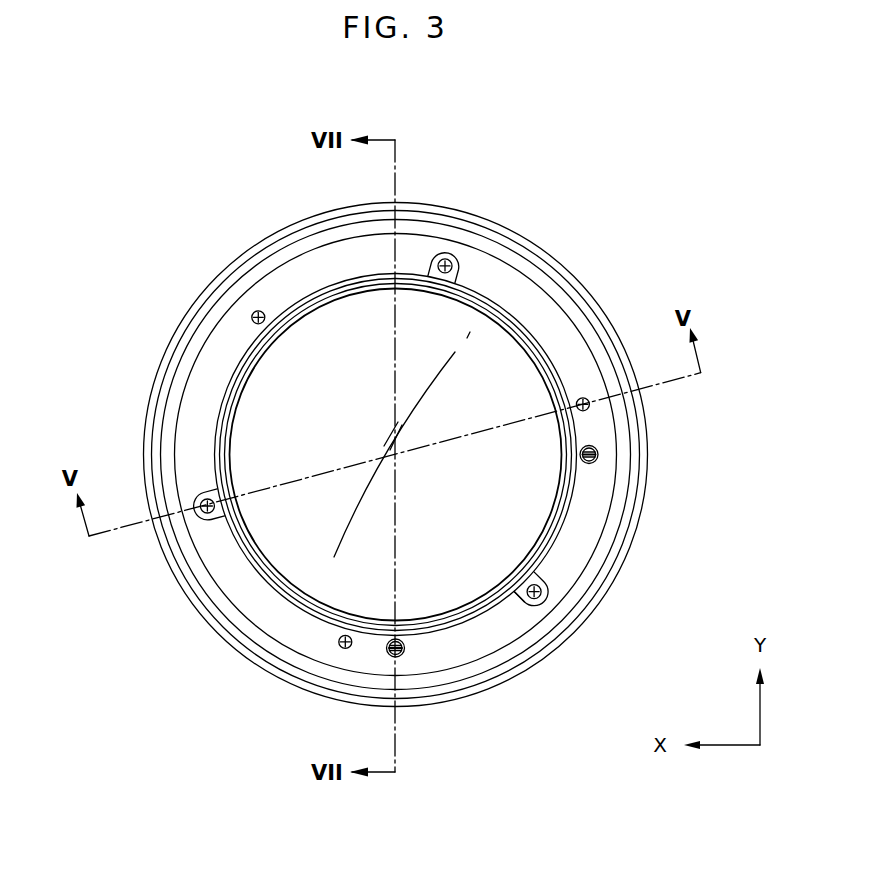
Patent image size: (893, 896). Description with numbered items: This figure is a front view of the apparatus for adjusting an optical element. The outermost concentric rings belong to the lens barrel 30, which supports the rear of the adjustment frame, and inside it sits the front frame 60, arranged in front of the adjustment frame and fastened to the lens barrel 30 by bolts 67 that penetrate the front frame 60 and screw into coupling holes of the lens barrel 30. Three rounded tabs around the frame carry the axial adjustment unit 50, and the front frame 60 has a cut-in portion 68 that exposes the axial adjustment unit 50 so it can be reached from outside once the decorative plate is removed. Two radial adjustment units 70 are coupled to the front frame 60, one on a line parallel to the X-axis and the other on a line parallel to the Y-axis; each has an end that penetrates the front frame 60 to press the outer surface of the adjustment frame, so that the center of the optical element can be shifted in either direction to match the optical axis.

The lens barrel 30 is at (249, 238).
The axial adjustment unit 50 is at (449, 259).
The front frame 60 is at (242, 594).
The bolt 67 is at (252, 313).
The cut-in portion 68 is at (522, 604).
The radial adjustment unit 70 is at (596, 461).